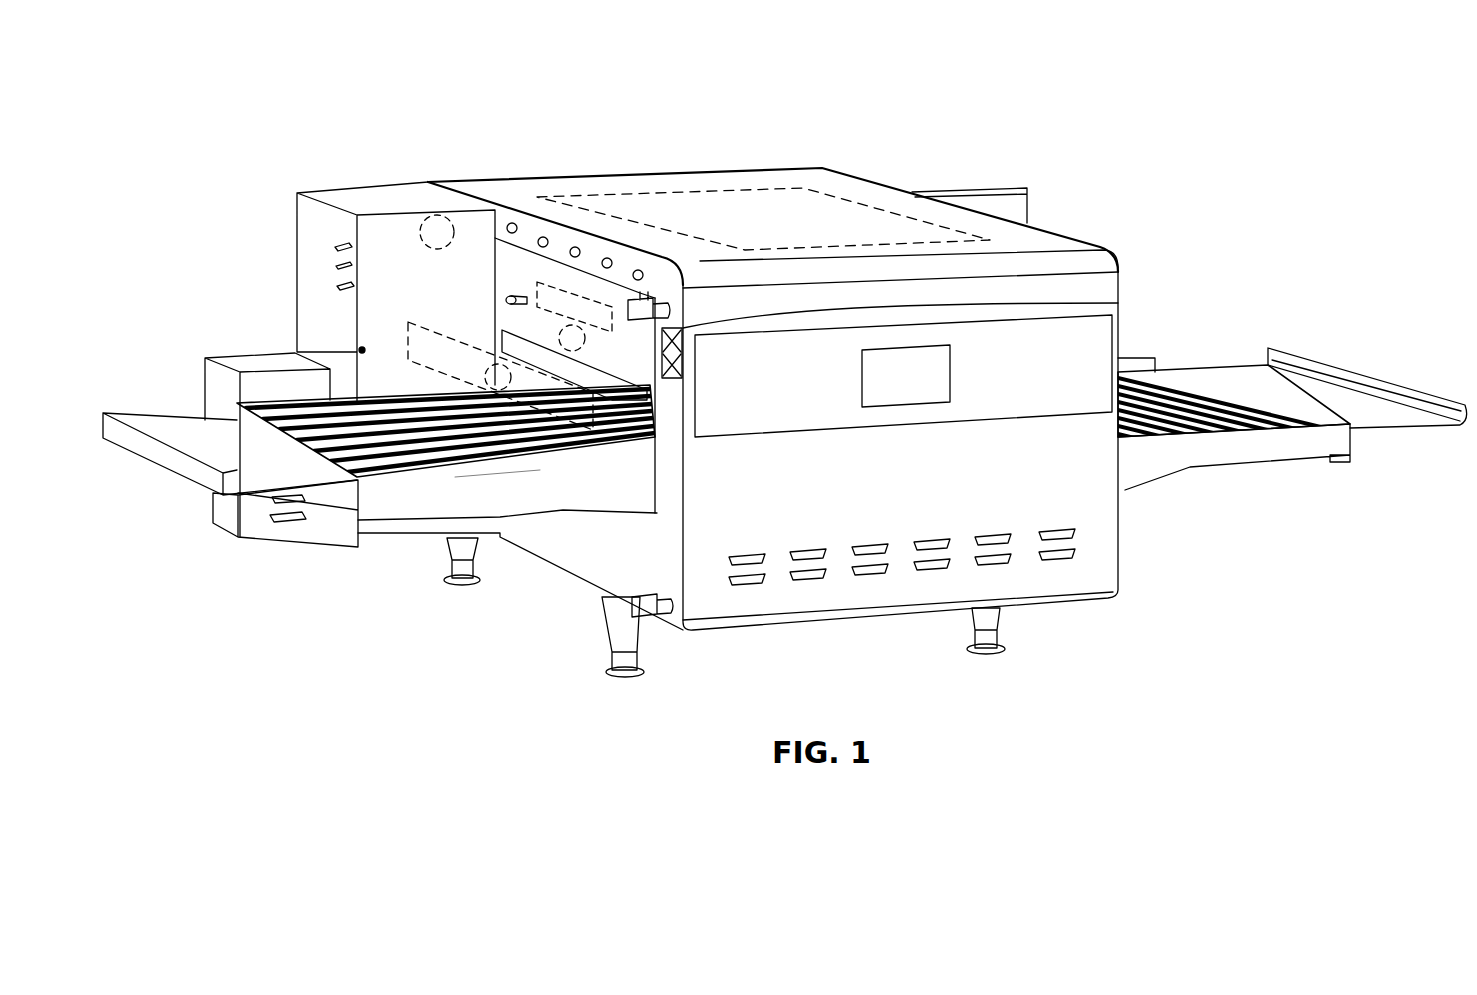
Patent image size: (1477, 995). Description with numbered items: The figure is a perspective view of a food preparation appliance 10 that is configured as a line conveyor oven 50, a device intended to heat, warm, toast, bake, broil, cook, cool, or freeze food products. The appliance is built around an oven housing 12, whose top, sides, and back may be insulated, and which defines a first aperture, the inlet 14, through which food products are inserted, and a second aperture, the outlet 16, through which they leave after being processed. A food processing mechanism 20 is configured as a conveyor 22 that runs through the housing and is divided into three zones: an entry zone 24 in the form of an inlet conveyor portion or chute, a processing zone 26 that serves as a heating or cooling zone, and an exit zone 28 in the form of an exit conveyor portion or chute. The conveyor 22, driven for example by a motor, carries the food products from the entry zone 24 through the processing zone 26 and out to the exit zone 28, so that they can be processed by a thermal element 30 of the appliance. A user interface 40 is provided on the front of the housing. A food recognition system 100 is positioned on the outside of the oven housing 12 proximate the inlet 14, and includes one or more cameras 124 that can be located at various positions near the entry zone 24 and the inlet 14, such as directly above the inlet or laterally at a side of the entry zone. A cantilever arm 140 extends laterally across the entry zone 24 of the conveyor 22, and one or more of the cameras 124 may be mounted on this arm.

The food preparation appliance 10 is at (326, 86).
The oven housing 12 is at (578, 185).
The inlet 14 is at (512, 342).
The outlet 16 is at (1128, 330).
The food processing mechanism 20 is at (345, 430).
The conveyor 22 is at (378, 478).
The entry zone 24 is at (410, 510).
The processing zone 26 is at (602, 470).
The exit zone 28 is at (1172, 392).
The thermal element 30 is at (842, 192).
The user interface 40 is at (928, 365).
The line conveyor oven 50 is at (1146, 122).
The food recognition system 100 is at (540, 282).
The camera 124 is at (430, 217).
The cantilever arm 140 is at (545, 432).